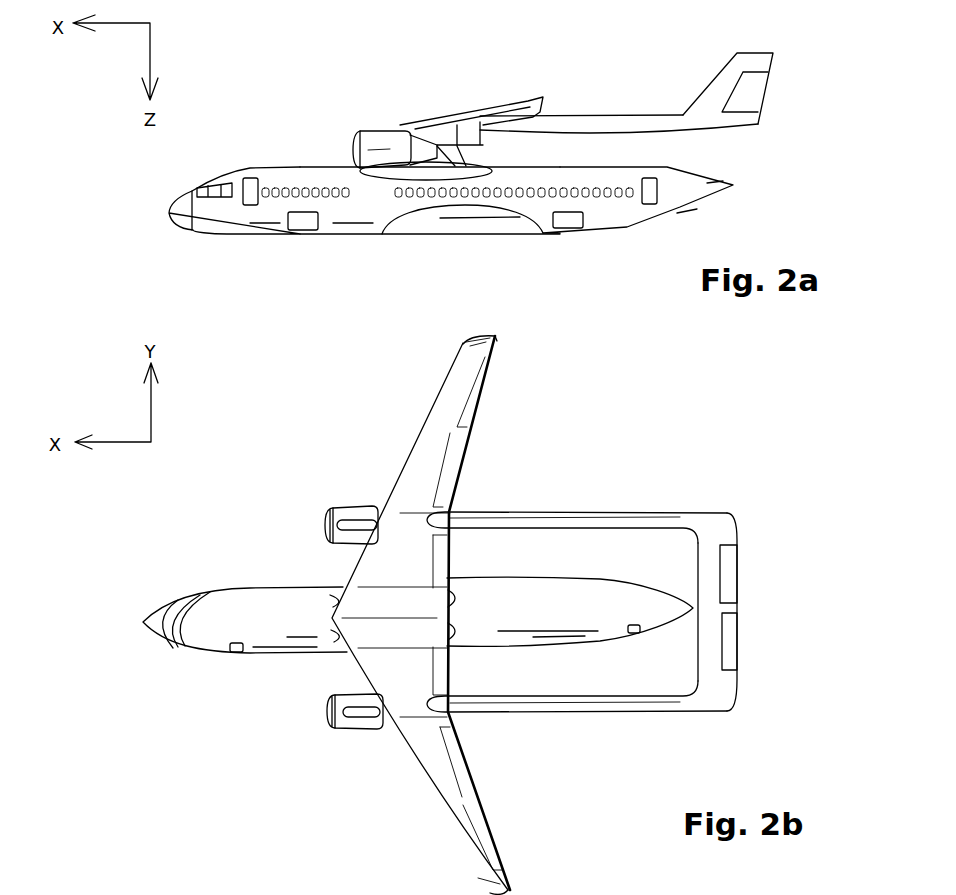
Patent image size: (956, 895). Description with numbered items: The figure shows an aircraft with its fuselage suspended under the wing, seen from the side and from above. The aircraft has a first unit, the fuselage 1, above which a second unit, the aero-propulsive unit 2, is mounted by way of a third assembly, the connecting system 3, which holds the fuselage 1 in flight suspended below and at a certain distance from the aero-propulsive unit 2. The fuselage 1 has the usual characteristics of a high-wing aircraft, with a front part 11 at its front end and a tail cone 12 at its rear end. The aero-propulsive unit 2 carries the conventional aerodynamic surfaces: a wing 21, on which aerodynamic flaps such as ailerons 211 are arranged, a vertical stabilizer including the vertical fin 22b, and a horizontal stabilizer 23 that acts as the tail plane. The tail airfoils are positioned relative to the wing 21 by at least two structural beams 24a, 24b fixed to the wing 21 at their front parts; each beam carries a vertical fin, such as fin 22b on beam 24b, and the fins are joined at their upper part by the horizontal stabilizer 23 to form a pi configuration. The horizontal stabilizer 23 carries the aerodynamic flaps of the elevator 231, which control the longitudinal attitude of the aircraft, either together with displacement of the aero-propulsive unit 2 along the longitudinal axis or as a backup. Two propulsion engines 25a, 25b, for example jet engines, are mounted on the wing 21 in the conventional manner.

In FIG. 2A, the fuselage 1 is at (451, 248).
In FIG. 2B, the fuselage 1 is at (418, 637).
In FIG. 2A, the front part 11 is at (205, 210).
In FIG. 2B, the front part 11 is at (217, 617).
In FIG. 2A, the tail cone 12 is at (605, 207).
In FIG. 2B, the tail cone 12 is at (627, 603).
In FIG. 2A, the aero-propulsive unit 2 is at (559, 87).
In FIG. 2B, the aero-propulsive unit 2 is at (542, 615).
In FIG. 2A, the wing 21 is at (457, 115).
In FIG. 2B, the wing 21 is at (455, 615).
In FIG. 2B, the ailerons 211 is at (480, 388).
In FIG. 2A, the connecting system 3 is at (475, 152).
In FIG. 2A, the vertical fin 22b is at (722, 80).
In FIG. 2B, the horizontal stabilizer 23 is at (601, 674).
In FIG. 2B, the elevator 231 is at (730, 650).
In FIG. 2B, the structural beam 24a is at (570, 512).
In FIG. 2A, the structural beam 24b is at (663, 122).
In FIG. 2B, the structural beam 24b is at (617, 708).
In FIG. 2B, the propulsion engine 25a is at (355, 515).
In FIG. 2A, the propulsion engine 25b is at (382, 147).
In FIG. 2B, the propulsion engine 25b is at (330, 715).